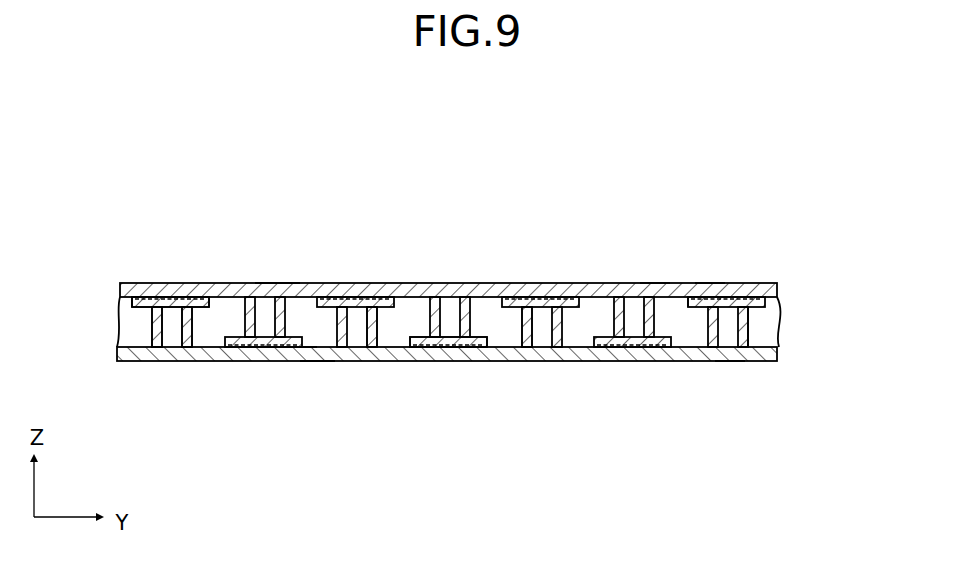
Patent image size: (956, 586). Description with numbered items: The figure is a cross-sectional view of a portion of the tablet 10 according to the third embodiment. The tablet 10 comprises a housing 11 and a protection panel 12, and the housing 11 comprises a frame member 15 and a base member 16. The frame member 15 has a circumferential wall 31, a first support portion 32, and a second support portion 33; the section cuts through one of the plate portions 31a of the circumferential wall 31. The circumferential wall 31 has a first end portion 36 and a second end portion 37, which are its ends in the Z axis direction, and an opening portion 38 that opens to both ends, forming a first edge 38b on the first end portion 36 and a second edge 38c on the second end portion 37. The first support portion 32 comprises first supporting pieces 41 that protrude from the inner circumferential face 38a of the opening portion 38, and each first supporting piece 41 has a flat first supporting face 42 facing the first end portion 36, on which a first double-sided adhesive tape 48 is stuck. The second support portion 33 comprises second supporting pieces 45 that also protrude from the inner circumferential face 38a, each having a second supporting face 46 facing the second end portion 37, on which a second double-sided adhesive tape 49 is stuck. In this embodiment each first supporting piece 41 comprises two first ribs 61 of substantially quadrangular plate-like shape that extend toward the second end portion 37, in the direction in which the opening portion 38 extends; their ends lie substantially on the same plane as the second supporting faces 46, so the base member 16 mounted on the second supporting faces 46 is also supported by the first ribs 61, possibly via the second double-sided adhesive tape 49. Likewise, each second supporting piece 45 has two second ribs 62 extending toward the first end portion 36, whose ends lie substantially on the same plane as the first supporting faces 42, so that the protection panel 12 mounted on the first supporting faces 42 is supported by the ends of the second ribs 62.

The tablet 10 is at (237, 230).
The housing 11 is at (217, 425).
The protection panel 12 is at (278, 283).
The frame member 15 is at (143, 338).
The base member 16 is at (187, 361).
The circumferential wall 31 is at (308, 361).
The plate portion 31a is at (327, 361).
The first support portion 32 is at (393, 197).
The second support portion 33 is at (482, 412).
The first end portion 36 is at (745, 283).
The second end portion 37 is at (763, 361).
The opening portion 38 is at (759, 313).
The inner circumferential face 38a is at (657, 283).
The first edge 38b is at (710, 283).
The second edge 38c is at (730, 361).
The first supporting piece 41 is at (150, 284).
The first supporting face 42 is at (168, 284).
The second supporting piece 45 is at (228, 361).
The second supporting face 46 is at (256, 361).
The first double-sided adhesive tape 48 is at (135, 283).
The second double-sided adhesive tape 49 is at (448, 361).
The first rib 61 is at (190, 325).
The second rib 62 is at (633, 283).